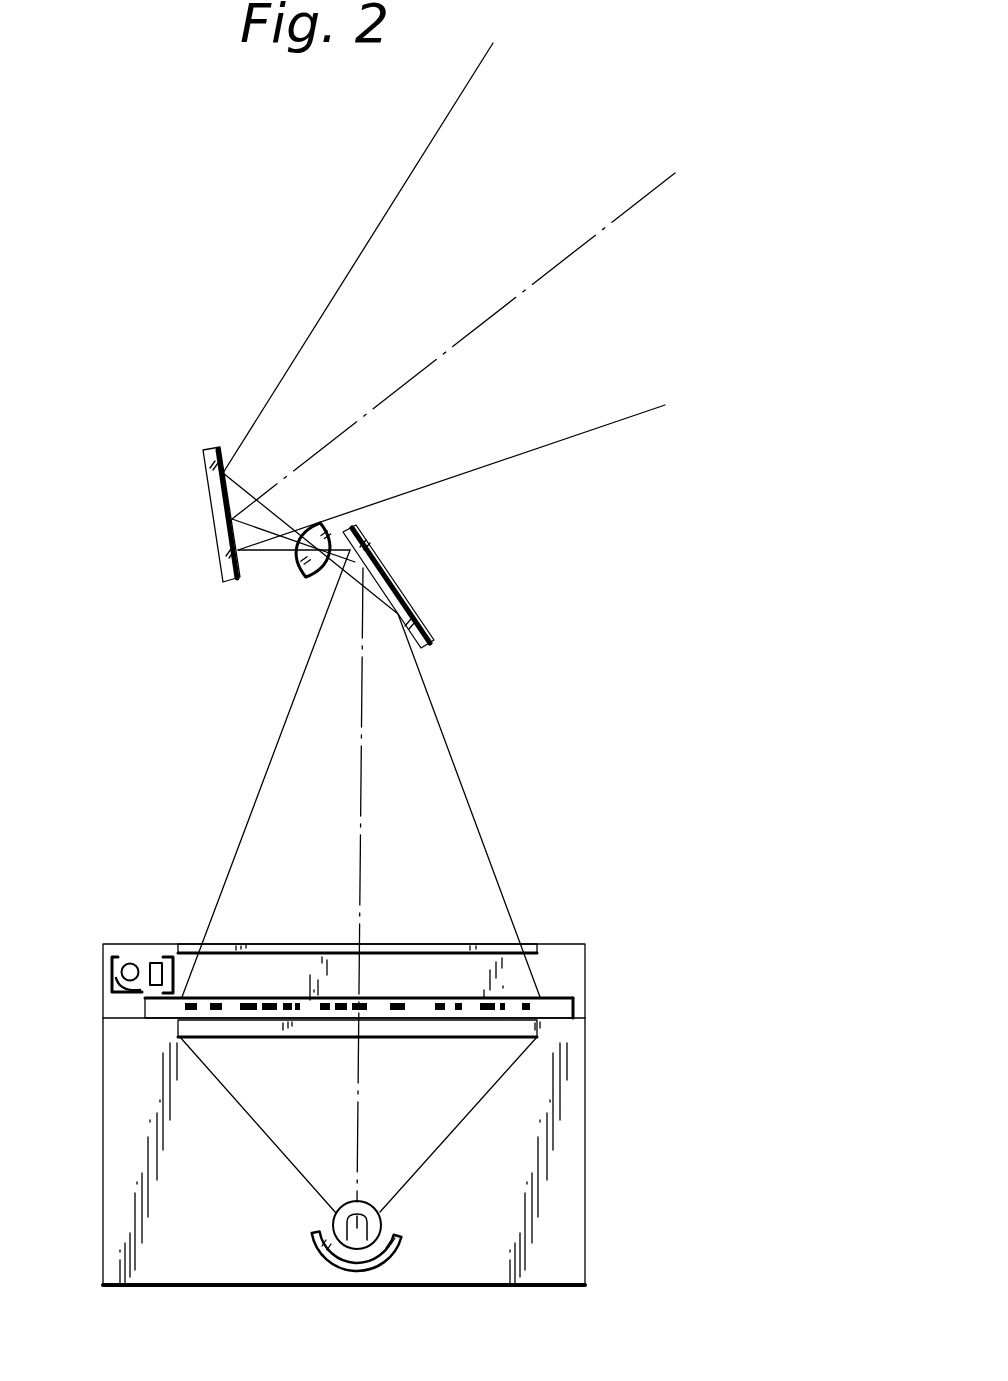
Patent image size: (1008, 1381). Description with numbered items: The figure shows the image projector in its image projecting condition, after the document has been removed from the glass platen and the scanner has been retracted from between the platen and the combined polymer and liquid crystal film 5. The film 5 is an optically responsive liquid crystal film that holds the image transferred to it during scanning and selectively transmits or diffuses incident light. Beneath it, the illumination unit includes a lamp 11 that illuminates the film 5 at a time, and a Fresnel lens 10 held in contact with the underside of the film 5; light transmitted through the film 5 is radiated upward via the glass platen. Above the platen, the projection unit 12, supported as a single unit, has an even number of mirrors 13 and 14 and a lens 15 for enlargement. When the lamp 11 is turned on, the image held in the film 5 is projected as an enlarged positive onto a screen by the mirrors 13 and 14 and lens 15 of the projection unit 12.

The combined polymer and liquid crystal film 5 is at (380, 997).
The Fresnel lens 10 is at (228, 1038).
The lamp 11 is at (382, 1247).
The projection unit 12 is at (172, 557).
The mirror 13 is at (410, 604).
The mirror 14 is at (207, 472).
The lens for enlargement 15 is at (305, 580).